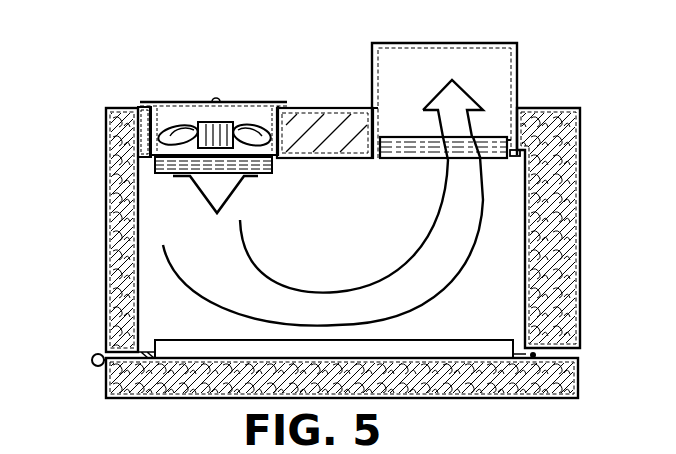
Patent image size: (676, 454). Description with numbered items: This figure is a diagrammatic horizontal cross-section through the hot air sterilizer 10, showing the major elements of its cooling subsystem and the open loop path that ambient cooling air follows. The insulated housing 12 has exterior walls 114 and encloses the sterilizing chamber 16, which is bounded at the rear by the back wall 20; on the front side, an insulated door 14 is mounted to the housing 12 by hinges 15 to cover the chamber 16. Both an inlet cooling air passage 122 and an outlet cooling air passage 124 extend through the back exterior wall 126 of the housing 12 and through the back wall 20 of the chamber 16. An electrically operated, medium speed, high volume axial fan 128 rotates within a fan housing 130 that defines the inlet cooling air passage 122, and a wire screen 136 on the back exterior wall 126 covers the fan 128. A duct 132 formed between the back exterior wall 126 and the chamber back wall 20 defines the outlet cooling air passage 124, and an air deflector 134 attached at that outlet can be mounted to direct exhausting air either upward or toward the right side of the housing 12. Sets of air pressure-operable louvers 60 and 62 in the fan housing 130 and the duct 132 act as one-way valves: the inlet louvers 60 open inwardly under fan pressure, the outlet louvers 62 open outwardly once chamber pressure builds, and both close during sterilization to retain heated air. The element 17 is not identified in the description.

The hot air sterilizer 10 is at (528, 412).
The housing 12 is at (100, 310).
The insulated door 14 is at (413, 399).
The hinges 15 is at (92, 358).
The sterilizing chamber 16 is at (337, 273).
The support platform 17 is at (145, 352).
The back wall 20 is at (323, 159).
The inlet set of louvers 60 is at (262, 172).
The outlet set of louvers 62 is at (404, 160).
The exterior walls 114 is at (582, 236).
The inlet cooling air passage 122 is at (193, 101).
The outlet cooling air passage 124 is at (480, 80).
The back exterior wall 126 is at (350, 108).
The axial fan 128 is at (143, 104).
The fan housing 130 is at (146, 143).
The duct 132 is at (497, 140).
The air deflector 134 is at (517, 62).
The wire screen 136 is at (178, 110).